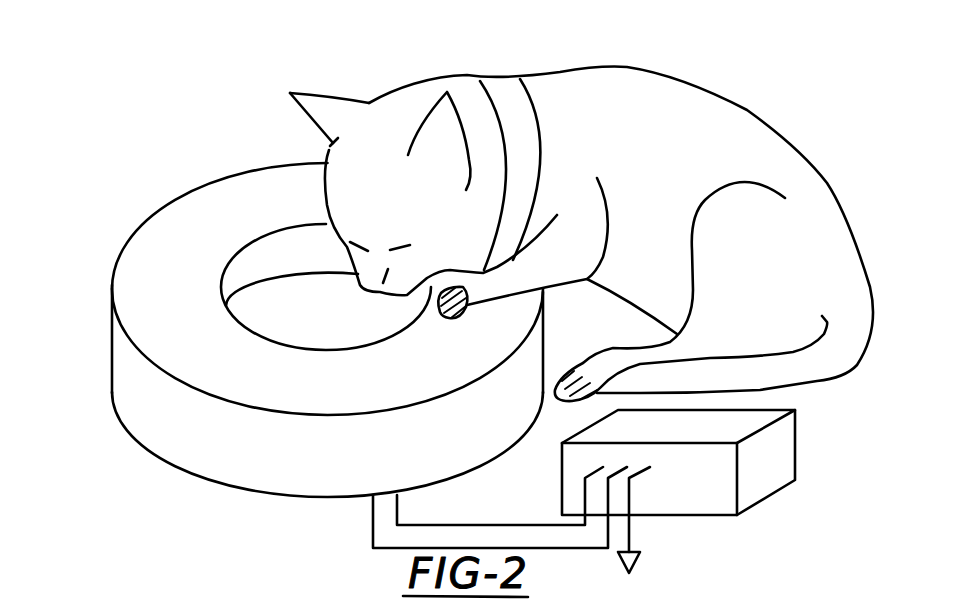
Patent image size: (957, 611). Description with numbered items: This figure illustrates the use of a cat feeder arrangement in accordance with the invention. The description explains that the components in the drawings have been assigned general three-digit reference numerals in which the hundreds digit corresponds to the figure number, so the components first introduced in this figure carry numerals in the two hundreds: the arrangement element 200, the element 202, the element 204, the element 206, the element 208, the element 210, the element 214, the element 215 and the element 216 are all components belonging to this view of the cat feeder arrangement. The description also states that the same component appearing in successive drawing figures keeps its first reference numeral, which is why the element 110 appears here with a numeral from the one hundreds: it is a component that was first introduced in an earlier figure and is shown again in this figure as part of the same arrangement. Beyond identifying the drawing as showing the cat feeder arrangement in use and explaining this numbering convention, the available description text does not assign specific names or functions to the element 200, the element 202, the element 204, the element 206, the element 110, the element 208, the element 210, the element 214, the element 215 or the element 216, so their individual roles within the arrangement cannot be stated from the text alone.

The pet watering bowl 200 is at (151, 208).
The cat (pet animal) 202 is at (252, 80).
The central opening of bowl 204 is at (261, 267).
The water surface in bowl 206 is at (342, 317).
The collar with transponder 110 is at (507, 80).
The wire to bowl sensor 208 is at (428, 526).
The control unit housing 210 is at (741, 518).
The terminal connections 214 is at (632, 497).
The ground connection 215 is at (640, 557).
The wire to bowl 216 is at (478, 549).